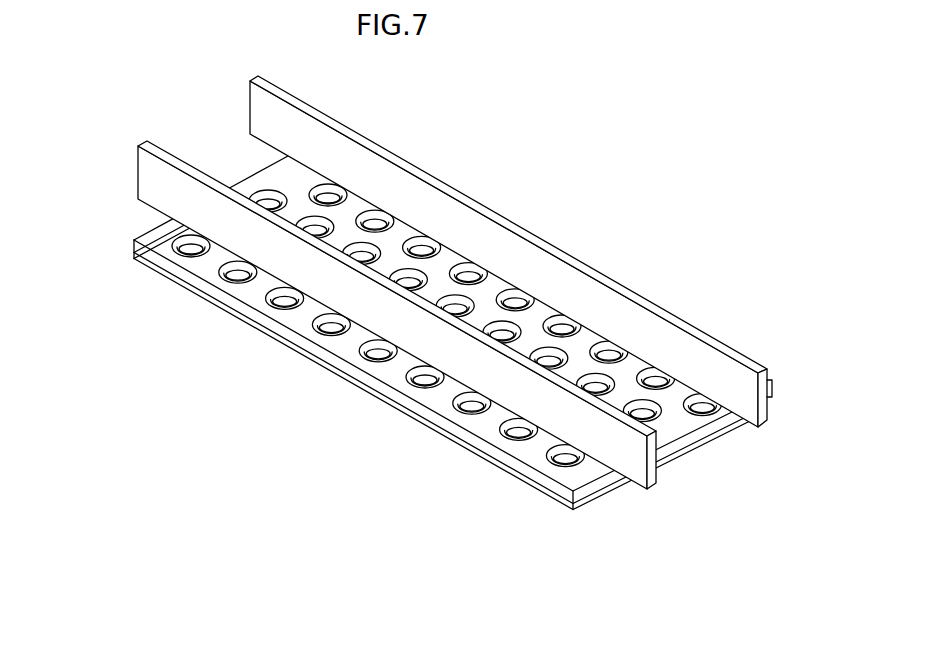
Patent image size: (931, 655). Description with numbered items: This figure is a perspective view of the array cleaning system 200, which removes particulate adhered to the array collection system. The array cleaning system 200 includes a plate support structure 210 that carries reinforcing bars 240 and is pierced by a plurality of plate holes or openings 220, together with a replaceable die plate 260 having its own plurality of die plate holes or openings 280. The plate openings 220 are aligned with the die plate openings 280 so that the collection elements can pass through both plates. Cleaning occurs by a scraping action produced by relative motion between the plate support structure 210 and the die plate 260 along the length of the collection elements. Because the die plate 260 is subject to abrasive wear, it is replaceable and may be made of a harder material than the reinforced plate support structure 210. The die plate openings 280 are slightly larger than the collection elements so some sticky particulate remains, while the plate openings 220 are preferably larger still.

The array cleaning system 200 is at (692, 221).
The plate support structure 210 is at (693, 413).
The plate holes or openings 220 is at (185, 245).
The reinforcing bars 240 is at (725, 368).
The replaceable die plate 260 is at (488, 462).
The die plate holes or openings 280 is at (240, 295).